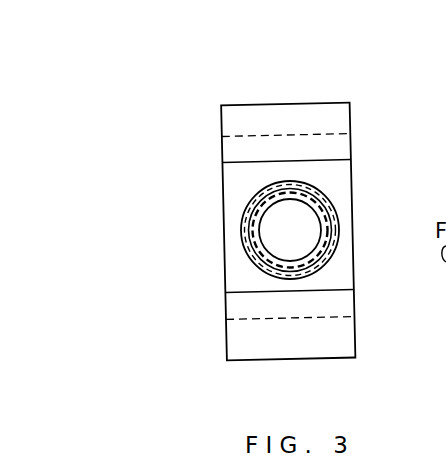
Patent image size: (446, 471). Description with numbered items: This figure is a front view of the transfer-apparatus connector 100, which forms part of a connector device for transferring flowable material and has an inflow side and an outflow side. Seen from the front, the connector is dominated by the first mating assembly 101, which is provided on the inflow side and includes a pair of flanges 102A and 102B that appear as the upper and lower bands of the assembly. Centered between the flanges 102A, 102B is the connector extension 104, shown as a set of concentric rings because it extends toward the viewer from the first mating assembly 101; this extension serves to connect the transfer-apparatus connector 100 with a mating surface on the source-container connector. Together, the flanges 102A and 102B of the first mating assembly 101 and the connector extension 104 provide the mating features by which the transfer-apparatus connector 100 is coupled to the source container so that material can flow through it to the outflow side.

The transfer-apparatus connector 100 is at (163, 105).
The first mating assembly 101 is at (242, 280).
The flange 102A is at (237, 313).
The flange 102B is at (232, 142).
The connector extension 104 is at (252, 210).